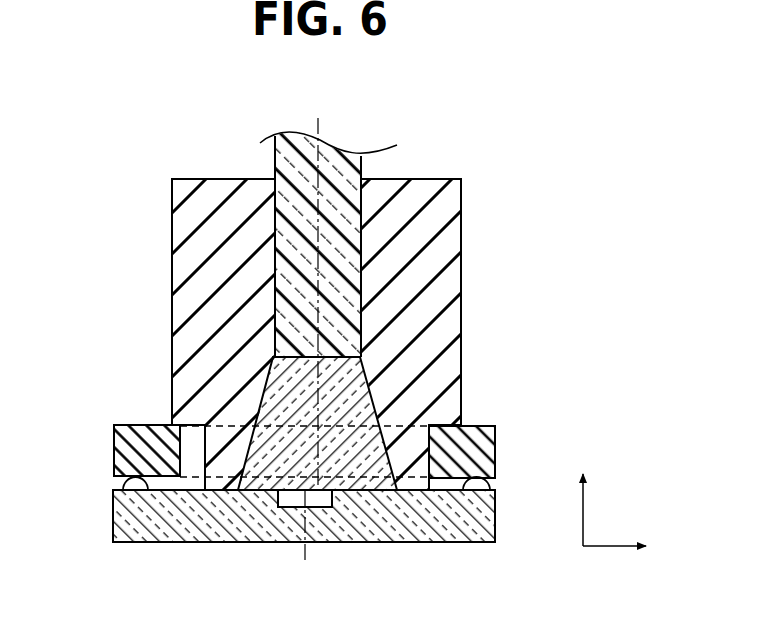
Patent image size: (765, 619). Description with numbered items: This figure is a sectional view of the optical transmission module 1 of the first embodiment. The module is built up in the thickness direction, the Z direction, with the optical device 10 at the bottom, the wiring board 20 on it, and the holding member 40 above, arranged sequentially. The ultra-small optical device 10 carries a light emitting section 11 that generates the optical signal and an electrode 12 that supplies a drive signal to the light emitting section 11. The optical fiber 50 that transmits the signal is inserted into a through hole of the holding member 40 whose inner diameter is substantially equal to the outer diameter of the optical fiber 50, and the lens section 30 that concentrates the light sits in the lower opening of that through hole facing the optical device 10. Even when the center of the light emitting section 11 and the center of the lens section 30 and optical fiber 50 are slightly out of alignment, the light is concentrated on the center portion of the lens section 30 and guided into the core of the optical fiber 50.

The optical transmission module 1 is at (579, 247).
The optical device 10 is at (113, 520).
The light emitting section 11 is at (283, 508).
The electrode 12 is at (121, 483).
The wiring board 20 is at (140, 424).
The lens section 30 is at (267, 386).
The holding member 40 is at (172, 232).
The optical fiber 50 is at (274, 163).